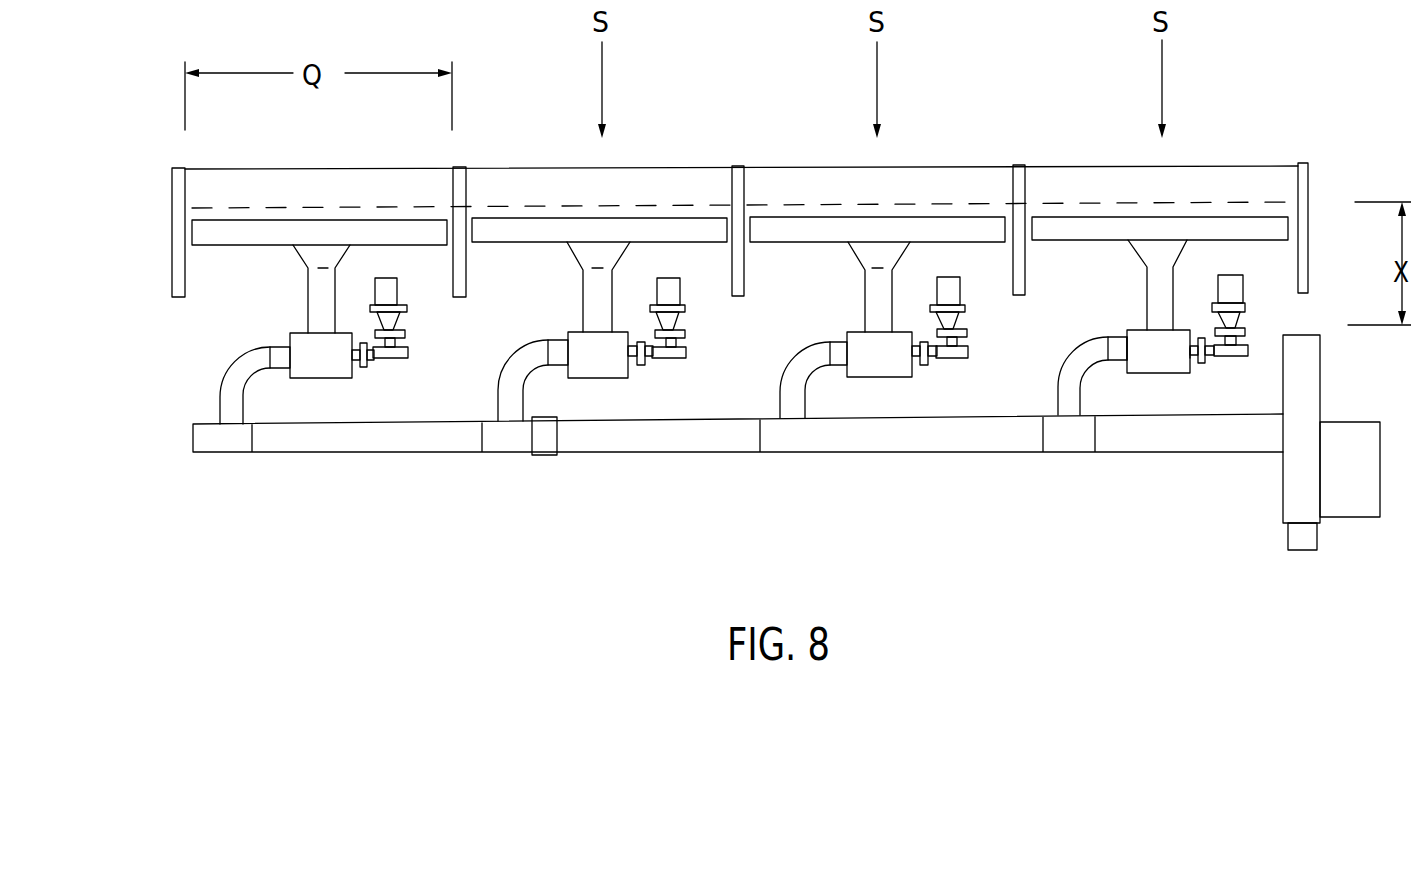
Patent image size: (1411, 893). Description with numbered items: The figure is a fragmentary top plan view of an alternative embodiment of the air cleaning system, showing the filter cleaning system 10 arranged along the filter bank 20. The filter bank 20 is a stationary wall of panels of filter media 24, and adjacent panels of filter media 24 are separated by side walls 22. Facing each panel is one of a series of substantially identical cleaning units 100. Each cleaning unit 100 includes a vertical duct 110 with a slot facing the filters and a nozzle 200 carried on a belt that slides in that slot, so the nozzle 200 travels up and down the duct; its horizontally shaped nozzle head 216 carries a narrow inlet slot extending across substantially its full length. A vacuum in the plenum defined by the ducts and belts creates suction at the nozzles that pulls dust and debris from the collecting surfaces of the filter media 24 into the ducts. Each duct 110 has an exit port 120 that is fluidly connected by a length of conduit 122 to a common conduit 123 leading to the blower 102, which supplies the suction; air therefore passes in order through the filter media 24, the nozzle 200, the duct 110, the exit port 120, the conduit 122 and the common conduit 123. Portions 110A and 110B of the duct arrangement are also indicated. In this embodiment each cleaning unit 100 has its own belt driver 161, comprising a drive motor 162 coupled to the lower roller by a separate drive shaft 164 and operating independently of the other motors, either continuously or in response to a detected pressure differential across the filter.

The filter cleaning system 10 is at (908, 490).
The filter bank 20 is at (1300, 148).
The side walls 22 is at (178, 185).
The filter media 24 is at (800, 204).
The nozzle head 216 is at (200, 230).
The nozzle 200 is at (541, 200).
The cleaning unit 100 is at (318, 388).
The blower 102 is at (1352, 515).
The vertical duct 110 is at (306, 338).
The inlet pipe section 110A is at (1125, 375).
The inlet pipe section 110B is at (1186, 375).
The exit port 120 is at (280, 350).
The conduit 122 is at (240, 403).
The common conduit 123 is at (348, 450).
The belt driver 161 is at (412, 318).
The drive motor 162 is at (386, 290).
The drive shaft 164 is at (398, 360).